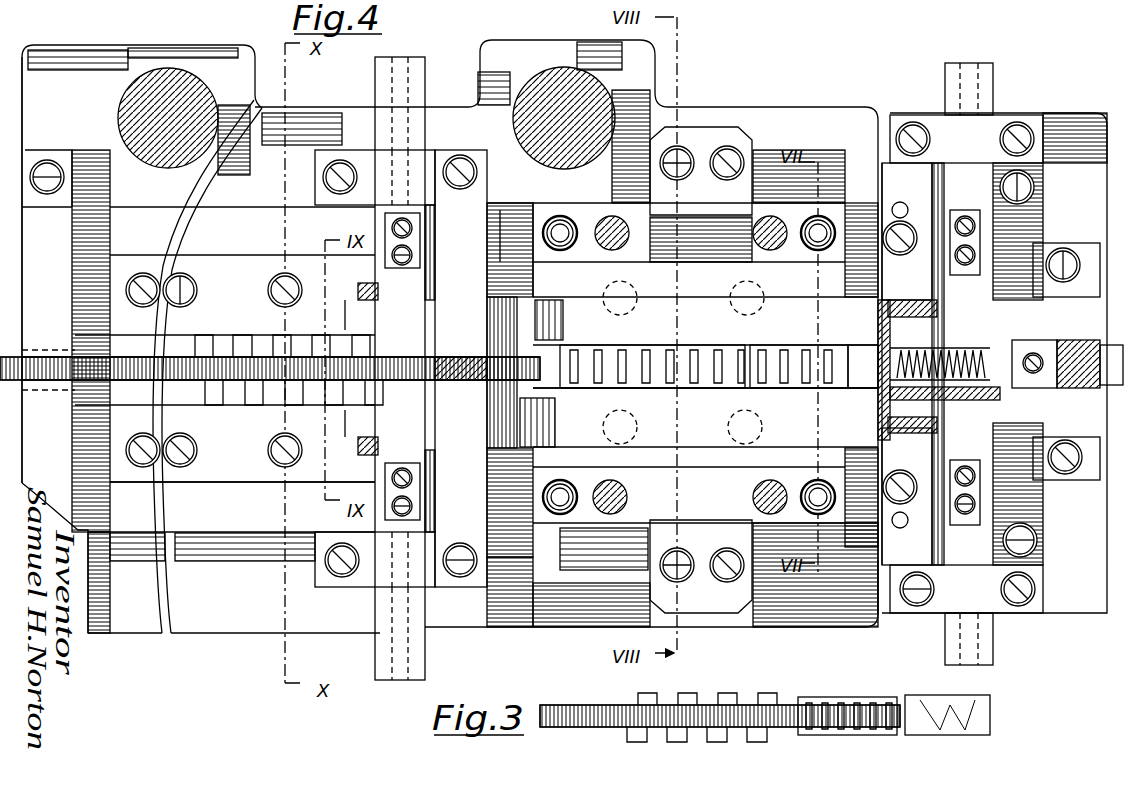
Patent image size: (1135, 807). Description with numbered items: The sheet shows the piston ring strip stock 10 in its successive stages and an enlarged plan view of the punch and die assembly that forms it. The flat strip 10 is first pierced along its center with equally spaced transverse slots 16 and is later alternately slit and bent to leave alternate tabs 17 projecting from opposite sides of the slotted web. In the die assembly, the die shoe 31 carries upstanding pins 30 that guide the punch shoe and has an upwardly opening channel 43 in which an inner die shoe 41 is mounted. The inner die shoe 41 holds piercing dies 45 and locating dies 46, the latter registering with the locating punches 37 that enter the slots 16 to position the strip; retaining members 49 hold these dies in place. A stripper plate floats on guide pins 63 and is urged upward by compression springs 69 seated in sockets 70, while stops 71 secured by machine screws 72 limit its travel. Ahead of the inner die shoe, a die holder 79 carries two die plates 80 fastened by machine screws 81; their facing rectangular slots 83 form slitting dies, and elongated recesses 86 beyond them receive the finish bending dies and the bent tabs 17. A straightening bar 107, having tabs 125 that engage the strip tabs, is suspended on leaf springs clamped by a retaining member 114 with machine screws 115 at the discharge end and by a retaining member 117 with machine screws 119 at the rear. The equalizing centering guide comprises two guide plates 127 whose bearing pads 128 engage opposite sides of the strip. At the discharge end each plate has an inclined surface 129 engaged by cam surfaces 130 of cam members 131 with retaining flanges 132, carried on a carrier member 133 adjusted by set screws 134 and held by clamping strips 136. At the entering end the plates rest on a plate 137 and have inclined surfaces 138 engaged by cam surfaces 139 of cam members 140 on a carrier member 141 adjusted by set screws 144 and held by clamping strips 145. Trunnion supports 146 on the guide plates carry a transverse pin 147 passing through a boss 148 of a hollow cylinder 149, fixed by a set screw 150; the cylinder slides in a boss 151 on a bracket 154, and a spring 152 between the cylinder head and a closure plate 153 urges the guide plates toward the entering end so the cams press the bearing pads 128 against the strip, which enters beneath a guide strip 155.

In FIG. 4, the piston ring stock 10 is at (828, 382).
In FIG. 3, the piston ring stock 10 is at (948, 697).
In FIG. 3, the transverse slots 16 is at (857, 703).
In FIG. 3, the tabs 17 is at (775, 693).
In FIG. 4, the pins 30 is at (168, 82).
In FIG. 4, the die shoe 31 is at (760, 104).
In FIG. 4, the locating punches 37 is at (740, 285).
In FIG. 4, the inner die shoe 41 is at (835, 210).
In FIG. 4, the channel 43 is at (233, 213).
In FIG. 4, the piercing dies 45 is at (715, 343).
In FIG. 4, the locating dies 46 is at (600, 347).
In FIG. 4, the retaining members 49 is at (647, 270).
In FIG. 4, the guide pins 63 is at (767, 218).
In FIG. 4, the compression springs 69 is at (553, 222).
In FIG. 4, the spring-receiving sockets 70 is at (557, 230).
In FIG. 4, the stops 71 is at (682, 157).
In FIG. 4, the machine screws 72 is at (727, 145).
In FIG. 4, the die holder 79 is at (128, 213).
In FIG. 4, the die plates 80 is at (220, 263).
In FIG. 4, the machine screws 81 is at (200, 293).
In FIG. 4, the rectangular slots 83 is at (265, 340).
In FIG. 4, the elongated recesses 86 is at (113, 340).
In FIG. 4, the straightening bar 107 is at (77, 375).
In FIG. 4, the retaining member 114 is at (60, 263).
In FIG. 4, the machine screws 115 is at (48, 167).
In FIG. 4, the retaining member 117 is at (472, 150).
In FIG. 4, the machine screws 119 is at (455, 153).
In FIG. 4, the tabs 125 is at (218, 340).
In FIG. 4, the guide plates 127 is at (563, 293).
In FIG. 4, the bearing pads 128 is at (392, 350).
In FIG. 4, the inclined engaging surface 129 is at (345, 300).
In FIG. 4, the inclined cam surfaces 130 is at (368, 276).
In FIG. 4, the cam members 131 is at (417, 243).
In FIG. 4, the retaining flanges 132 is at (433, 288).
In FIG. 4, the carrier member 133 is at (378, 627).
In FIG. 4, the set screws 134 is at (420, 70).
In FIG. 4, the clamping strips 136 is at (330, 152).
In FIG. 4, the plate 137 is at (1082, 602).
In FIG. 4, the inclined engaging surfaces 138 is at (1000, 297).
In FIG. 4, the inclined cam surfaces 139 is at (937, 283).
In FIG. 4, the cam members 140 is at (1037, 193).
In FIG. 4, the adjustable carrier member 141 is at (990, 84).
In FIG. 4, the set screws 144 is at (993, 70).
In FIG. 4, the clamping strips 145 is at (930, 120).
In FIG. 4, the trunnion supports 146 is at (1060, 263).
In FIG. 4, the transverse pin 147 is at (1047, 260).
In FIG. 4, the boss 148 is at (1060, 380).
In FIG. 4, the hollow cylinder 149 is at (1060, 268).
In FIG. 4, the set screw 150 is at (1042, 360).
In FIG. 4, the boss 151 is at (997, 417).
In FIG. 4, the spring 152 is at (842, 335).
In FIG. 4, the closure plate 153 is at (870, 362).
In FIG. 4, the bracket 154 is at (885, 610).
In FIG. 4, the guide strip 155 is at (1087, 430).